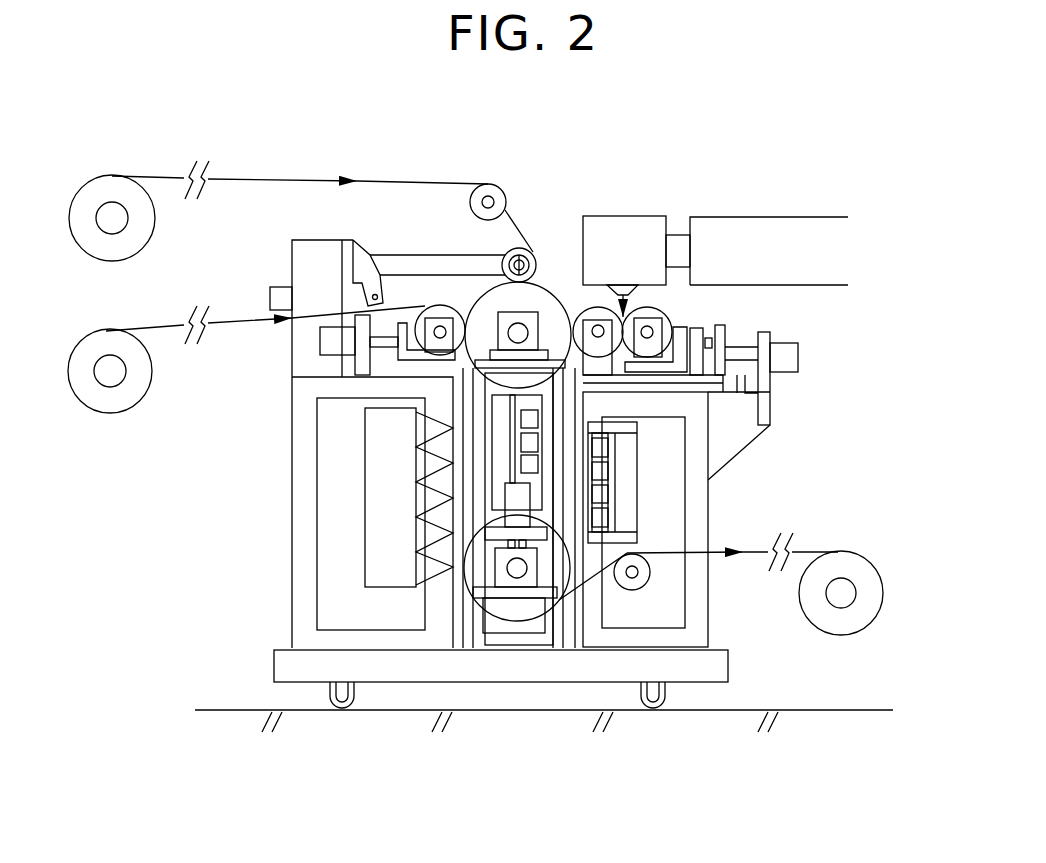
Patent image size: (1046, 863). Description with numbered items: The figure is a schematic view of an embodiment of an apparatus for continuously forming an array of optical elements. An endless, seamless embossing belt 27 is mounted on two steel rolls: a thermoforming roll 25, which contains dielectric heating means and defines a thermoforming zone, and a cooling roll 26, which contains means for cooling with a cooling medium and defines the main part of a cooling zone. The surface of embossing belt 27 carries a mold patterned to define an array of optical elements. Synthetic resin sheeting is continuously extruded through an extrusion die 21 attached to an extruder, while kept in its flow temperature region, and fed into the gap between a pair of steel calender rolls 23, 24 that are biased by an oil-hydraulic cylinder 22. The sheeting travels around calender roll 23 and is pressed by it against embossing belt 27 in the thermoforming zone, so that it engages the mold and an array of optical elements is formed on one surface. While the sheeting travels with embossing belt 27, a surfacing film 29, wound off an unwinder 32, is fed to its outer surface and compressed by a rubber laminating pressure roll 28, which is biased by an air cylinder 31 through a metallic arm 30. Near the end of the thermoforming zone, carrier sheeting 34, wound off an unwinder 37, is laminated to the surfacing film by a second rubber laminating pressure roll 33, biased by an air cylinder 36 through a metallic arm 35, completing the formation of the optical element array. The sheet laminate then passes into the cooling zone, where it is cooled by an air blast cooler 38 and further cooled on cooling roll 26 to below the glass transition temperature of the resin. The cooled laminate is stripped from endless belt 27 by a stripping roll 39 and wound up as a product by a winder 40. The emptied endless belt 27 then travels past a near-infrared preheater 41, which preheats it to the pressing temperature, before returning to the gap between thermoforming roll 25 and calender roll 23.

The extrusion die 21 is at (619, 237).
The oil-hydraulic cylinder 22 is at (787, 360).
The calender roll 23 is at (592, 315).
The calender roll 24 is at (657, 315).
The thermoforming roll 25 is at (537, 305).
The cooling roll 26 is at (516, 613).
The endless embossing belt 27 is at (460, 540).
The laminating pressure roll 28 is at (528, 238).
The surfacing film 29 is at (277, 180).
The metallic arm 30 is at (440, 264).
The air cylinder 31 is at (280, 295).
The unwinder 32 is at (112, 190).
The laminating pressure roll 33 is at (441, 318).
The carrier sheeting 34 is at (153, 327).
The metallic arm 35 is at (388, 343).
The air cylinder 36 is at (333, 340).
The unwinder 37 is at (112, 397).
The air blast cooler 38 is at (397, 567).
The stripping roll 39 is at (630, 582).
The winder 40 is at (857, 575).
The preheater 41 is at (617, 497).